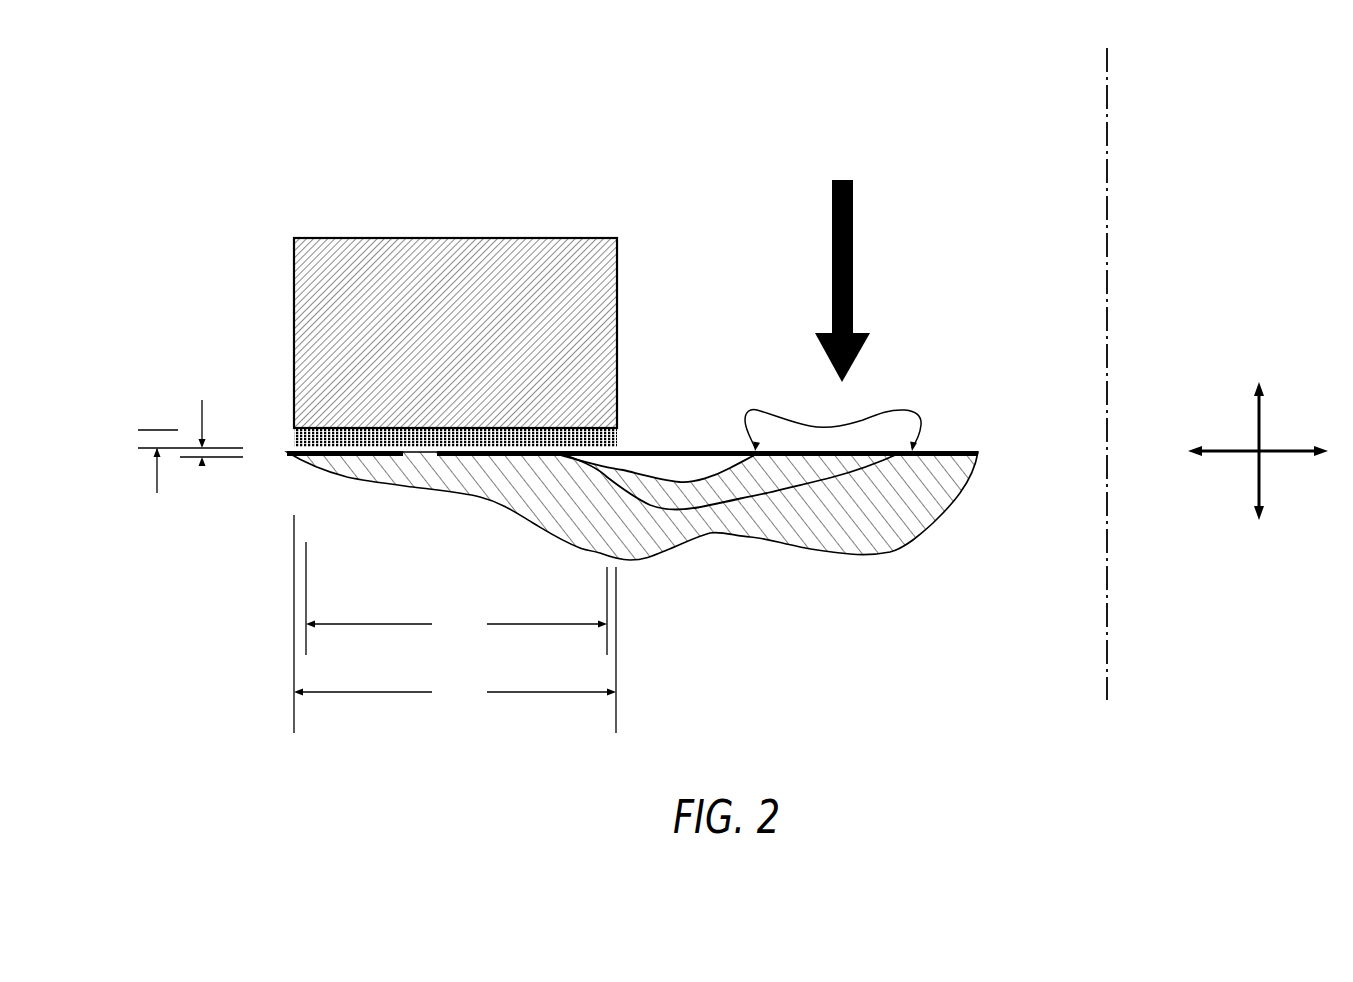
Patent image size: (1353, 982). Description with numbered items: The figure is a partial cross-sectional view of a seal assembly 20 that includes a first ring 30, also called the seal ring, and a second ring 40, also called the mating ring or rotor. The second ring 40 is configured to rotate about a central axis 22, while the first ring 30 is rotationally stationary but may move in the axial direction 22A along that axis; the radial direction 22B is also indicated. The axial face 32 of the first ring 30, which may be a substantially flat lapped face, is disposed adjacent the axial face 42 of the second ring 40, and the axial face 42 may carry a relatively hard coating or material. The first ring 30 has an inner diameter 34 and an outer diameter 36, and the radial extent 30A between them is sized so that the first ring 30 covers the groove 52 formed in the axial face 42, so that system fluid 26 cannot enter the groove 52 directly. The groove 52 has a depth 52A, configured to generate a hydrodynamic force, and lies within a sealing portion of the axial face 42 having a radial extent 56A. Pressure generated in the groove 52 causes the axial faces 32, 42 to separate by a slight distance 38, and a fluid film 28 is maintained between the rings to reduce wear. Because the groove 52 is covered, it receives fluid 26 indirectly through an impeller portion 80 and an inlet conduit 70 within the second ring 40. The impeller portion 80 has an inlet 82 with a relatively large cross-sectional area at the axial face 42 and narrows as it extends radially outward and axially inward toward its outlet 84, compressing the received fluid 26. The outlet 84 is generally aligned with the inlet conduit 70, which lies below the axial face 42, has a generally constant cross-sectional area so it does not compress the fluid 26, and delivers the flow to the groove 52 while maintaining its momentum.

The seal assembly 20 is at (305, 145).
The central axis 22 is at (1105, 85).
The axial direction 22A is at (1263, 422).
The radial direction 22B is at (1280, 455).
The system fluid 26 is at (853, 252).
The fluid film 28 is at (630, 437).
The first ring 30 is at (446, 238).
The radial extent 30A is at (455, 624).
The axial face 32 is at (284, 442).
The inner diameter 34 is at (630, 271).
The outer diameter 36 is at (282, 271).
The distance 38 is at (157, 422).
The second ring 40 is at (963, 507).
The axial face 42 is at (957, 451).
The groove 52 is at (412, 465).
The depth 52A is at (202, 458).
The radial extent 56A is at (456, 598).
The inlet conduit 70 is at (641, 456).
The impeller portion 80 is at (792, 475).
The inlet 82 is at (866, 451).
The outlet 84 is at (708, 495).